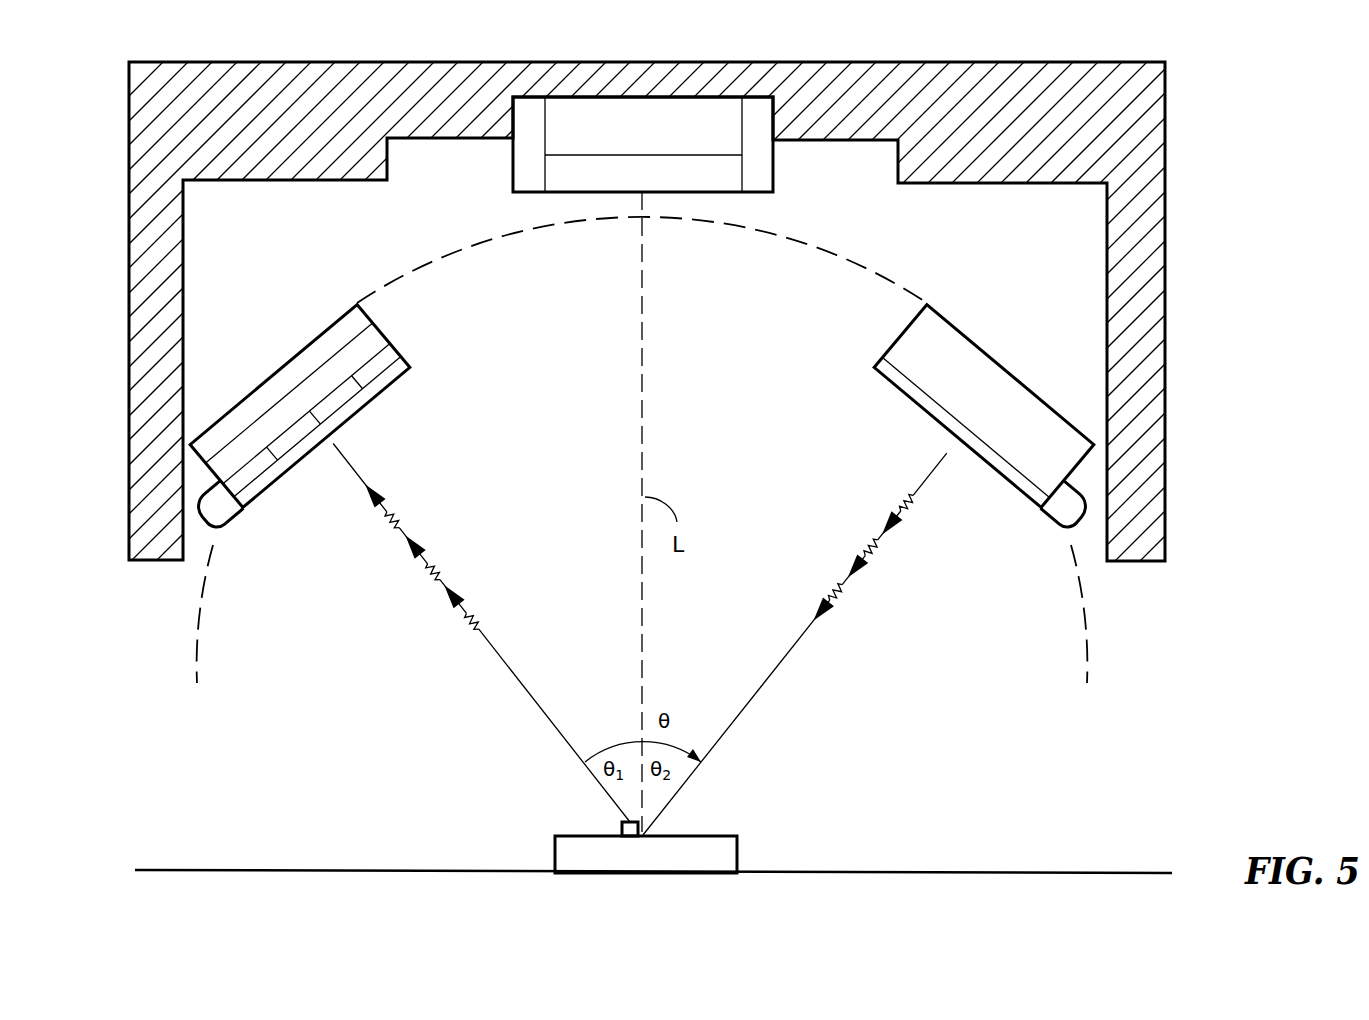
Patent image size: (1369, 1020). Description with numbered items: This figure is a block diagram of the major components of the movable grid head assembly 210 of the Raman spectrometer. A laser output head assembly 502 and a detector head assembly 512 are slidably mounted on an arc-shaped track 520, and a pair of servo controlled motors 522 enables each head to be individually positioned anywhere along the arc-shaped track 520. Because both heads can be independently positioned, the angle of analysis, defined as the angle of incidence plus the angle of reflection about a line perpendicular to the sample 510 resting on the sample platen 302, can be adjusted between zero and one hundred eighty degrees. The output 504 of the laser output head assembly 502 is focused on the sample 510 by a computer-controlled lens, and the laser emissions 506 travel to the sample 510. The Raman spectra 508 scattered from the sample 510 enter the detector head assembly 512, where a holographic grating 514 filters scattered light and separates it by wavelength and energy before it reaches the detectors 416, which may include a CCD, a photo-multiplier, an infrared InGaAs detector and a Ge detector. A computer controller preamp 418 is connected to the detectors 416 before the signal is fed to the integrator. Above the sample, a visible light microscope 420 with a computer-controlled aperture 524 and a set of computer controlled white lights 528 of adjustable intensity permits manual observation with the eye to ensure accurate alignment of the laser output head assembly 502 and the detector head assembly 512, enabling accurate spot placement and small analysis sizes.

The movable grid head assembly 210 is at (903, 62).
The visible light microscope 420 is at (640, 105).
The computer controlled white lights 528 is at (534, 107).
The computer-controlled aperture 524 is at (572, 178).
The arc-shaped track 520 is at (815, 248).
The detector head assembly 512 is at (365, 347).
The computer controller preamp 418 is at (308, 348).
The detectors 416 is at (393, 337).
The holographic grating 514 is at (403, 357).
The servo controlled motors 522 is at (228, 527).
The laser output head assembly 502 is at (983, 353).
The output 504 is at (883, 370).
The Raman spectra 508 is at (430, 562).
The laser emissions 506 is at (870, 555).
The sample 510 is at (720, 836).
The sample platen 302 is at (845, 872).